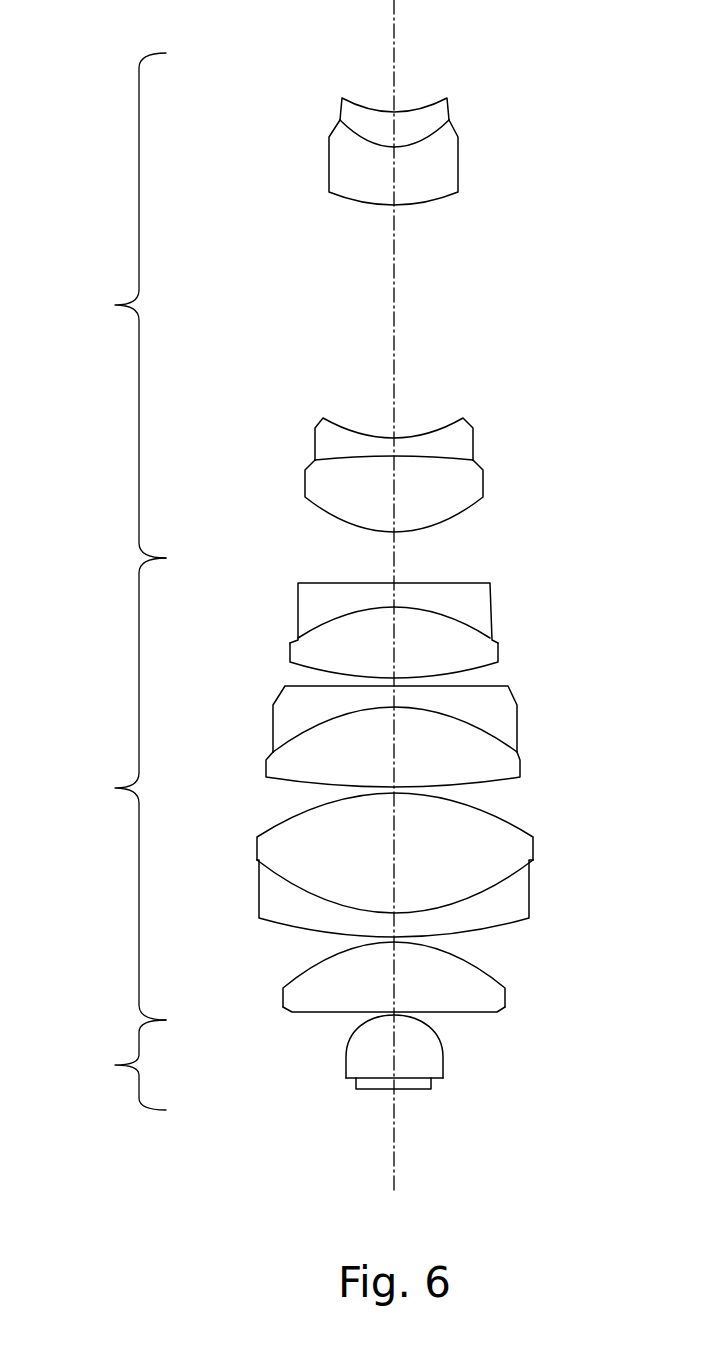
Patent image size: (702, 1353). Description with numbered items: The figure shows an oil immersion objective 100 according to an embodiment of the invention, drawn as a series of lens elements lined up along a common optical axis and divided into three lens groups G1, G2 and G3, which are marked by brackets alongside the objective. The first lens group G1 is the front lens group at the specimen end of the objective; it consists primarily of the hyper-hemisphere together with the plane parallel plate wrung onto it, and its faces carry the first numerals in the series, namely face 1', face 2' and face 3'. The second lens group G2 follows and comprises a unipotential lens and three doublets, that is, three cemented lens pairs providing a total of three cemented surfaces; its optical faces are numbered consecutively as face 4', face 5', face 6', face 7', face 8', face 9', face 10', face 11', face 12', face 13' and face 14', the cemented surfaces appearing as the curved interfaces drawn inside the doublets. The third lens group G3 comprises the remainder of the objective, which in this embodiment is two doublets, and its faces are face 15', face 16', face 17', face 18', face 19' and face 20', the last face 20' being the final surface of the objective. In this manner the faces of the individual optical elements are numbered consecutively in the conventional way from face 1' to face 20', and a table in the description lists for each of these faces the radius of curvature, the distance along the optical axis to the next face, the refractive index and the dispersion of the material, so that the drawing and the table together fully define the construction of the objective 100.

The oil immersion objective 100 is at (78, 676).
The first lens group G1 is at (126, 1065).
The second lens group G2 is at (126, 789).
The third lens group G3 is at (126, 305).
The face 1' is at (405, 1118).
The face 2' is at (429, 1074).
The face 3' is at (429, 1046).
The face 4' is at (424, 1009).
The face 5' is at (421, 974).
The face 6' is at (422, 898).
The face 7' is at (419, 886).
The face 8' is at (419, 826).
The face 9' is at (421, 772).
The face 10' is at (431, 730).
The face 11' is at (440, 716).
The face 12' is at (431, 662).
The face 13' is at (427, 622).
The face 14' is at (410, 587).
The face 15' is at (434, 496).
The face 16' is at (431, 425).
The face 17' is at (404, 413).
The face 18' is at (407, 194).
The face 19' is at (427, 136).
The face 20' is at (401, 85).